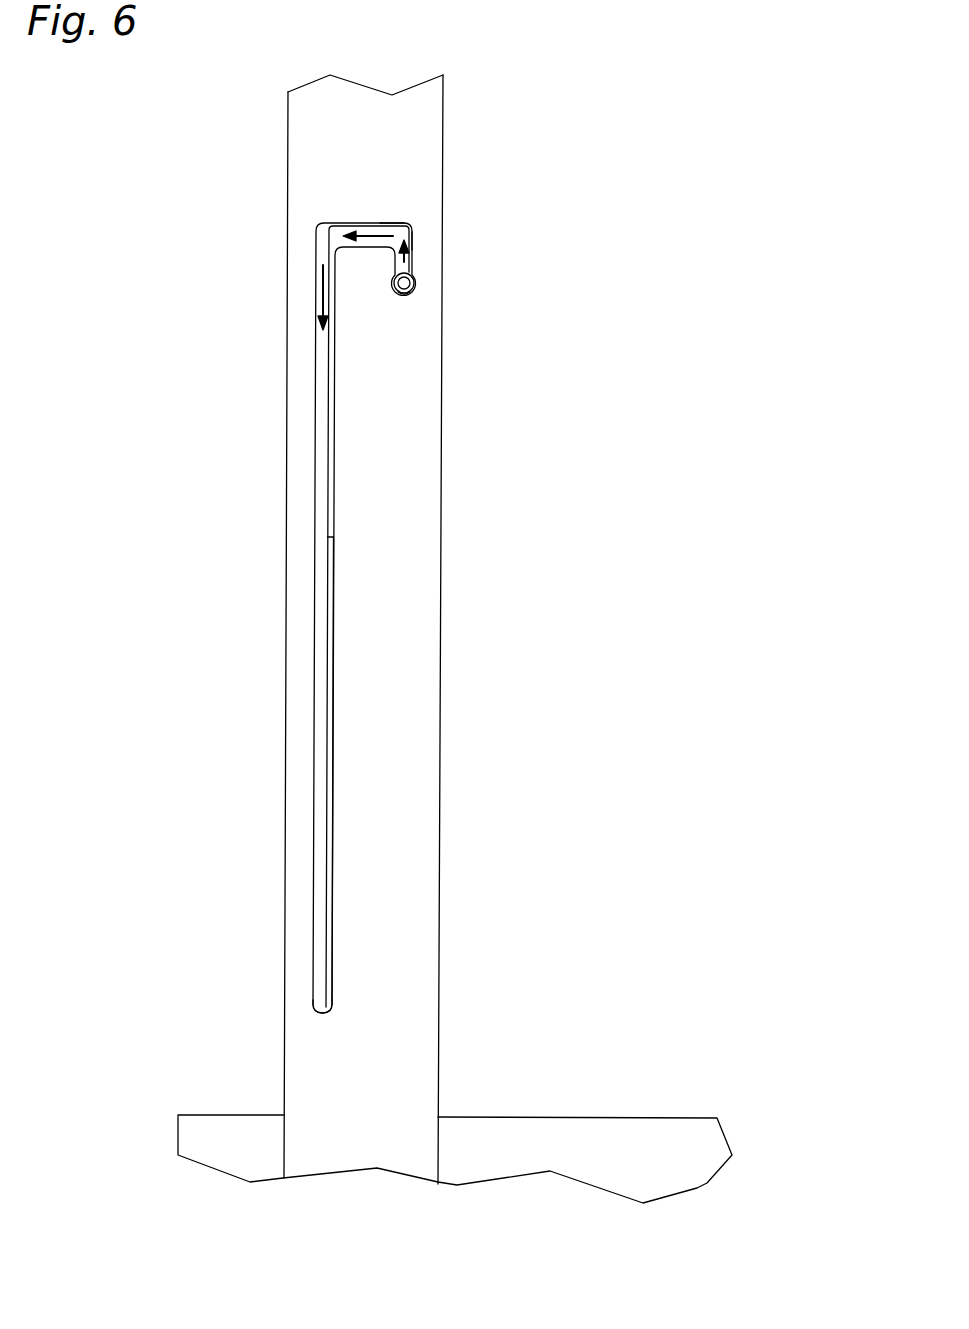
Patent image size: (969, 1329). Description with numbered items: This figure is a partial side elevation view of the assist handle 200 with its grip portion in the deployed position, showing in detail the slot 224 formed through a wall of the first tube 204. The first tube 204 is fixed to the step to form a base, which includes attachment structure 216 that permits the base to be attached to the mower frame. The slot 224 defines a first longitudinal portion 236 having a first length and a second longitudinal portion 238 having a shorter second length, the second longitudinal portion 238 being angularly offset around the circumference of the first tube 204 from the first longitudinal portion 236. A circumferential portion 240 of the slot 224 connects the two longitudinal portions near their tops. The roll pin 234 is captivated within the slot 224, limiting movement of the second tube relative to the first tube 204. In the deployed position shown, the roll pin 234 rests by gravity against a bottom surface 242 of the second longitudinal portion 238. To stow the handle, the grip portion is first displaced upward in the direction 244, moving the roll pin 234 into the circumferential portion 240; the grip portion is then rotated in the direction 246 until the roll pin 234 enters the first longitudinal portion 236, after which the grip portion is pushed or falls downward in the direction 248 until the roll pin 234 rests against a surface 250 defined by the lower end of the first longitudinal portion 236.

The handle 200 is at (443, 122).
The first tube 204 is at (288, 500).
The attachment structure 216 is at (555, 1136).
The slot 224 is at (315, 386).
The first longitudinal portion 236 is at (315, 567).
The circumferential portion 240 is at (350, 222).
The direction 246 is at (388, 224).
The second longitudinal portion 238 is at (413, 242).
The direction 244 is at (406, 258).
The roll pin 234 is at (414, 283).
The bottom surface 242 is at (404, 295).
The direction 248 is at (322, 285).
The surface 250 is at (322, 1013).